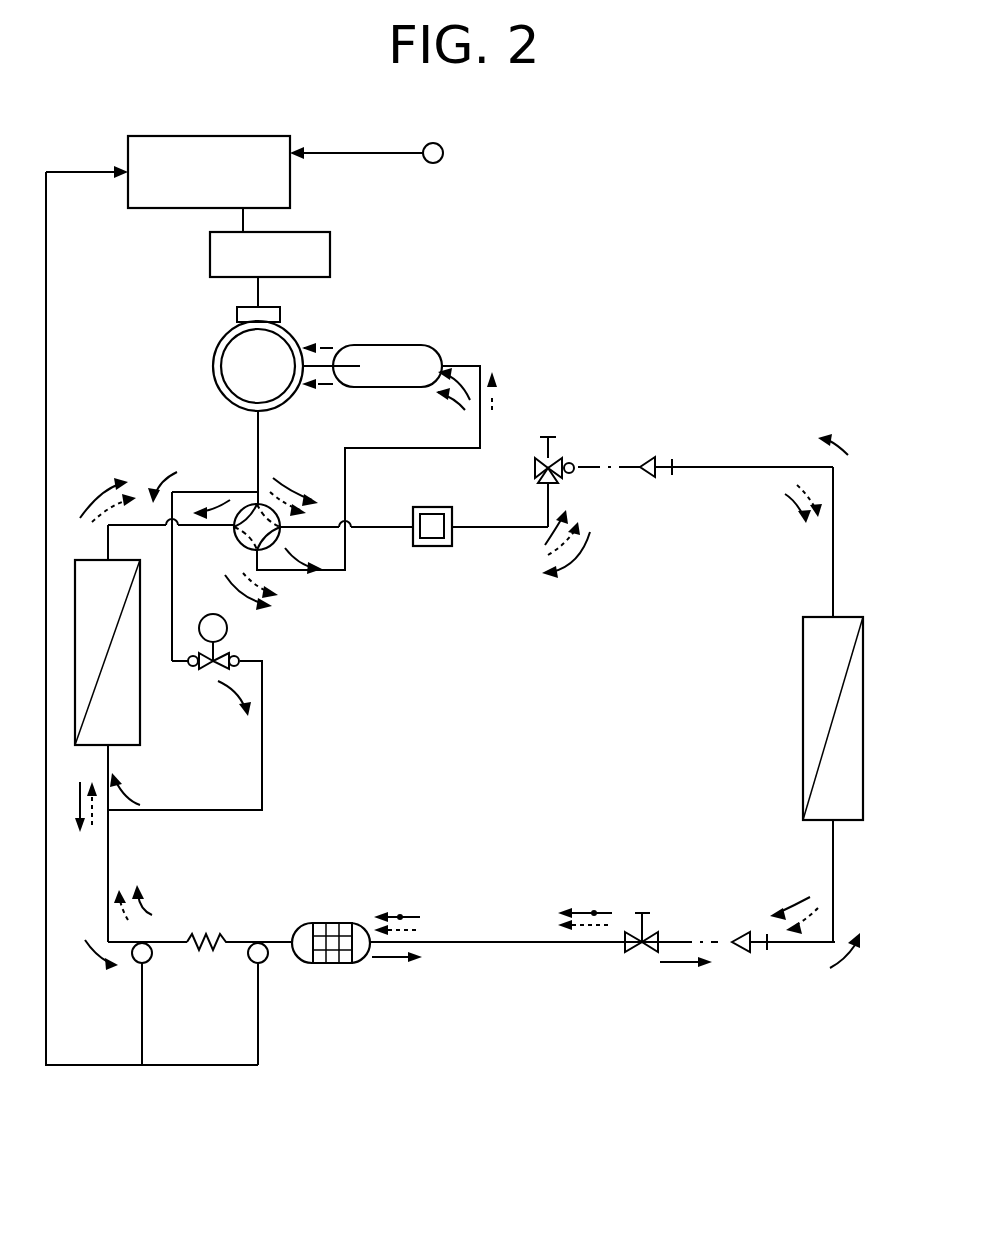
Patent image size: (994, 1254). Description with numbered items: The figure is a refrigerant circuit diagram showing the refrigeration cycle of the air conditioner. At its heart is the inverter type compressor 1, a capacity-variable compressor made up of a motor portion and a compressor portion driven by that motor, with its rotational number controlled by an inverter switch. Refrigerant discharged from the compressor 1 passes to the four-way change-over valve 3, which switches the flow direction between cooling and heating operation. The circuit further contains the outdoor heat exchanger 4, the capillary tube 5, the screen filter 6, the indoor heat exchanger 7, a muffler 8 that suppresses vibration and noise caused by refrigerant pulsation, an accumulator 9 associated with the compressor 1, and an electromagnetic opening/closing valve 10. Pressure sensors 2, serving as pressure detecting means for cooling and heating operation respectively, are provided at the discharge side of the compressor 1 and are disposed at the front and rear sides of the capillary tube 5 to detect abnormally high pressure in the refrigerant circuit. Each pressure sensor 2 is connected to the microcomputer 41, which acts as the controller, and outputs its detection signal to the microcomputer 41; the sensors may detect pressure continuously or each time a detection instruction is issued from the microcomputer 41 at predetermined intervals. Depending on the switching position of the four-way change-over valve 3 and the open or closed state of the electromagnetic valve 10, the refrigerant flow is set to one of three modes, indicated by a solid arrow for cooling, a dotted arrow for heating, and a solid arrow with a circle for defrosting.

The inverter type compressor 1 is at (221, 347).
The pressure sensors 2 is at (150, 960).
The four-way change-over valve 3 is at (262, 505).
The outdoor heat exchanger 4 is at (132, 710).
The capillary tube 5 is at (205, 935).
The screen filter 6 is at (332, 923).
The indoor heat exchanger 7 is at (803, 697).
The muffler 8 is at (437, 532).
The accumulator 9 is at (405, 345).
The electromagnetic opening/closing valve 10 is at (228, 626).
The microcomputer 41 is at (290, 183).